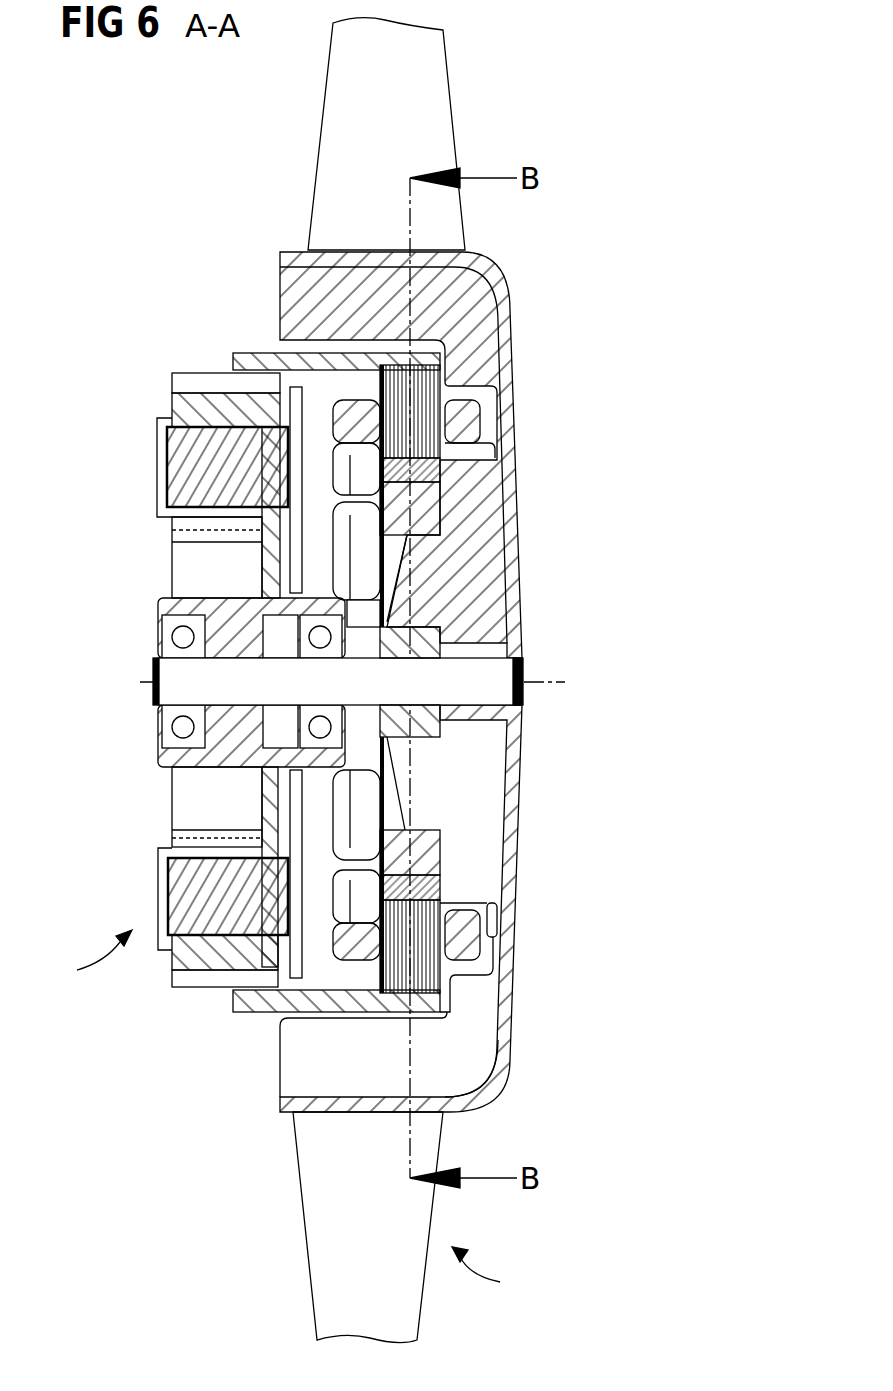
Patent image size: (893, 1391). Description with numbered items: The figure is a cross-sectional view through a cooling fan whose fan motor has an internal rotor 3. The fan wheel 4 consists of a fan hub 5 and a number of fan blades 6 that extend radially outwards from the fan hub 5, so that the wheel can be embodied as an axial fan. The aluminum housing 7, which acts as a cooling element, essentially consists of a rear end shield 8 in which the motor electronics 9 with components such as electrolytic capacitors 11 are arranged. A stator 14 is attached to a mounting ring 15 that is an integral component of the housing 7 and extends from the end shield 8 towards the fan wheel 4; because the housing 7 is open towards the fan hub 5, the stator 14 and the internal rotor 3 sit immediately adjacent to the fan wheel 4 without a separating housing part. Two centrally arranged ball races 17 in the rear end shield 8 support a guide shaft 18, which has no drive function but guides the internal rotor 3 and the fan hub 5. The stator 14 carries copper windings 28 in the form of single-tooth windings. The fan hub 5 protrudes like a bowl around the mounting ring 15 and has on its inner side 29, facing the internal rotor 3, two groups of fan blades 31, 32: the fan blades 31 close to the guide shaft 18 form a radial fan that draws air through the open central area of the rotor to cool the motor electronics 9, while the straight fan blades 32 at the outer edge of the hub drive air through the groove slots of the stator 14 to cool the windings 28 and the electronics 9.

The internal rotor 3 is at (425, 835).
The fan wheel 4 is at (487, 1271).
The fan hub 5 is at (510, 985).
The fan blades 6 is at (338, 130).
The aluminum housing 7 is at (180, 563).
The rear end shield 8 is at (96, 968).
The motor electronics 9 is at (303, 410).
The electrolytic capacitors 11 is at (185, 462).
The stator 14 is at (373, 975).
The mounting ring 15 is at (305, 360).
The ball races 17 is at (180, 637).
The guide shaft 18 is at (500, 672).
The copper windings 28 is at (468, 413).
The inner side 29 is at (495, 907).
The fan blades 31 is at (490, 752).
The fan blades 32 is at (470, 1045).